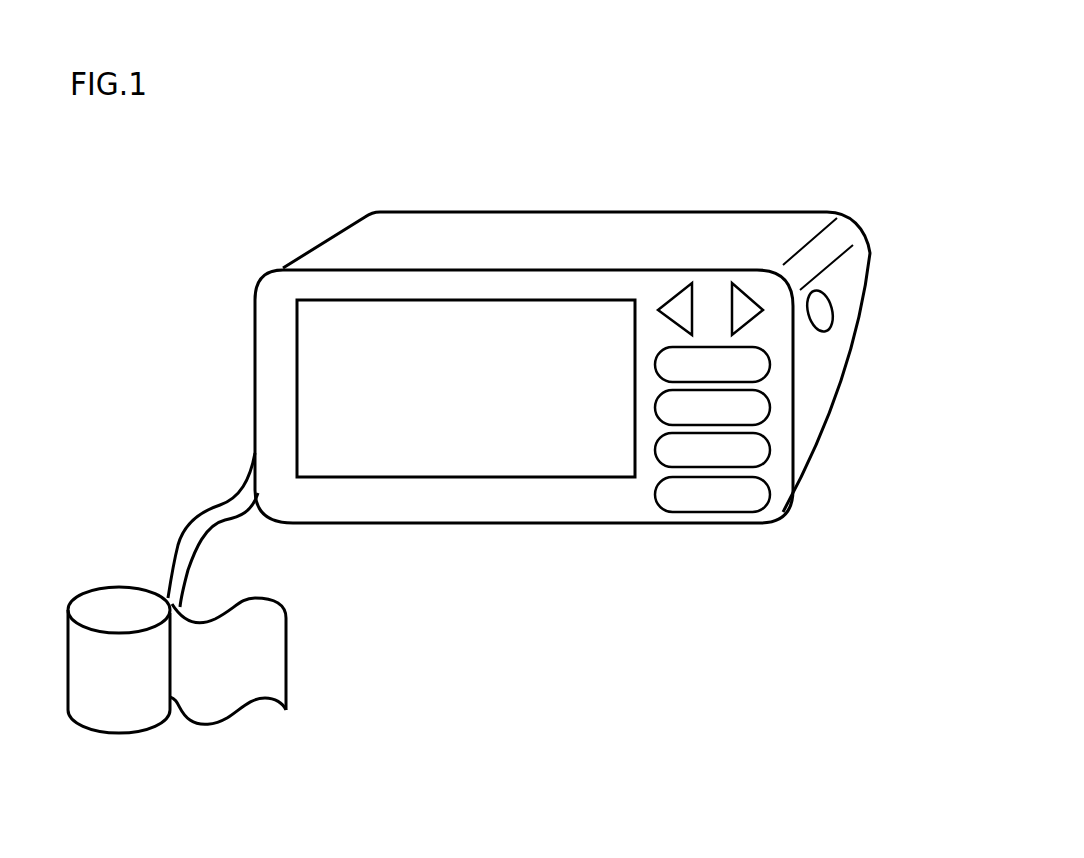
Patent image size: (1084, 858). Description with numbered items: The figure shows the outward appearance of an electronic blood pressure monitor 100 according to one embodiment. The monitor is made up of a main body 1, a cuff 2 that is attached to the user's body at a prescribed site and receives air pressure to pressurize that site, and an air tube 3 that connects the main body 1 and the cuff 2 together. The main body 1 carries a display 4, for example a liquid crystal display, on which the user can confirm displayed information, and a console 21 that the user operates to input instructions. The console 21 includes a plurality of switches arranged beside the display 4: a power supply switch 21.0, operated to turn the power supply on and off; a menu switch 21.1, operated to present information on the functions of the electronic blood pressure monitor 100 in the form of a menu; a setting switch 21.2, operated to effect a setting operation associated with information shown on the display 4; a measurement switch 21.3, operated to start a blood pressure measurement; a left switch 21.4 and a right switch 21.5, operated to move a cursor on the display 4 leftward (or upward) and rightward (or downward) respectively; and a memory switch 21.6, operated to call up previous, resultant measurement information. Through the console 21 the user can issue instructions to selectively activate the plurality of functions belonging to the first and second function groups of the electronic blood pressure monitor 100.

The electronic blood pressure monitor 100 is at (829, 152).
The main body 1 is at (583, 212).
The cuff 2 is at (123, 598).
The air tube 3 is at (190, 537).
The display 4 is at (473, 300).
The console 21 is at (905, 300).
The power supply switch 21.0 is at (832, 312).
The menu switch 21.1 is at (770, 365).
The setting switch 21.2 is at (770, 407).
The measurement switch 21.3 is at (770, 448).
The left switch 21.4 is at (694, 318).
The right switch 21.5 is at (740, 318).
The memory switch 21.6 is at (770, 493).